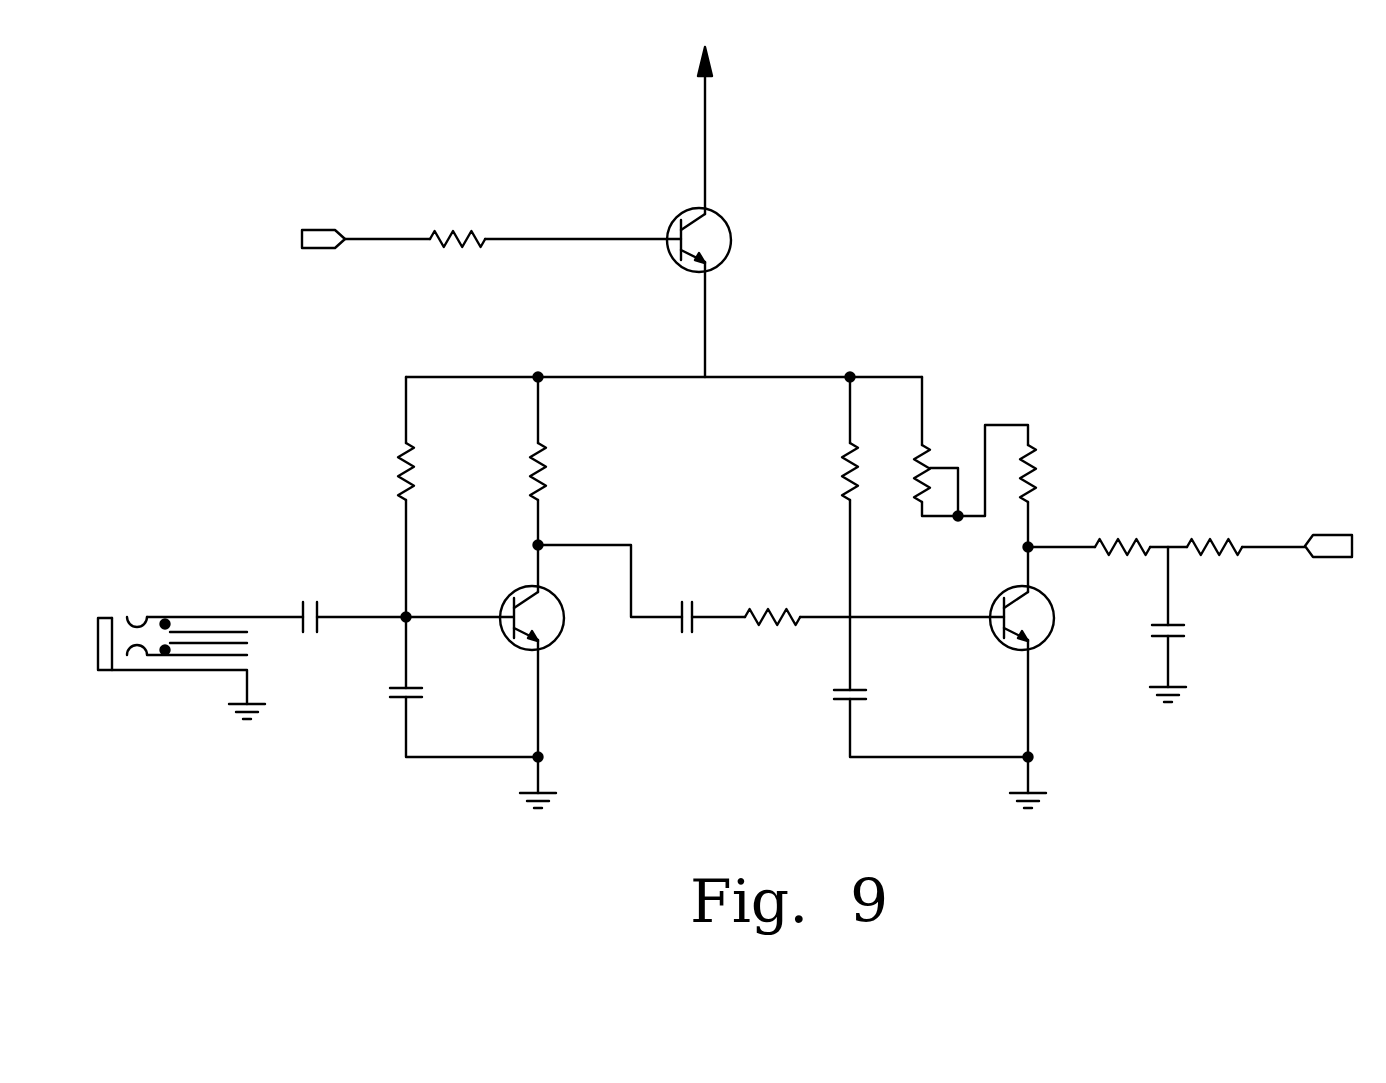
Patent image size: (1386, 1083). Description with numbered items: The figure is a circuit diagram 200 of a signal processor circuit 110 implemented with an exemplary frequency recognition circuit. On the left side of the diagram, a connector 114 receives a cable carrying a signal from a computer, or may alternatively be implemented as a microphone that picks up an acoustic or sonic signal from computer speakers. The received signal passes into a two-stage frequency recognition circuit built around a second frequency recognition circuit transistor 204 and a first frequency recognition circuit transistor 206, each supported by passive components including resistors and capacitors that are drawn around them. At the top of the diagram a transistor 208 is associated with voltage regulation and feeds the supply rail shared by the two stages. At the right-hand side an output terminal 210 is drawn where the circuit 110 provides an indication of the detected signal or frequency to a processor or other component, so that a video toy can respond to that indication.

The signal processor circuit 110 is at (1138, 352).
The connector 114 is at (170, 672).
The circuit diagram 200 is at (1246, 147).
The second frequency recognition circuit transistor 204 is at (564, 618).
The first frequency recognition circuit transistor 206 is at (1054, 618).
The transistor associated with voltage regulation 208 is at (731, 240).
The output terminal 210 is at (1330, 535).